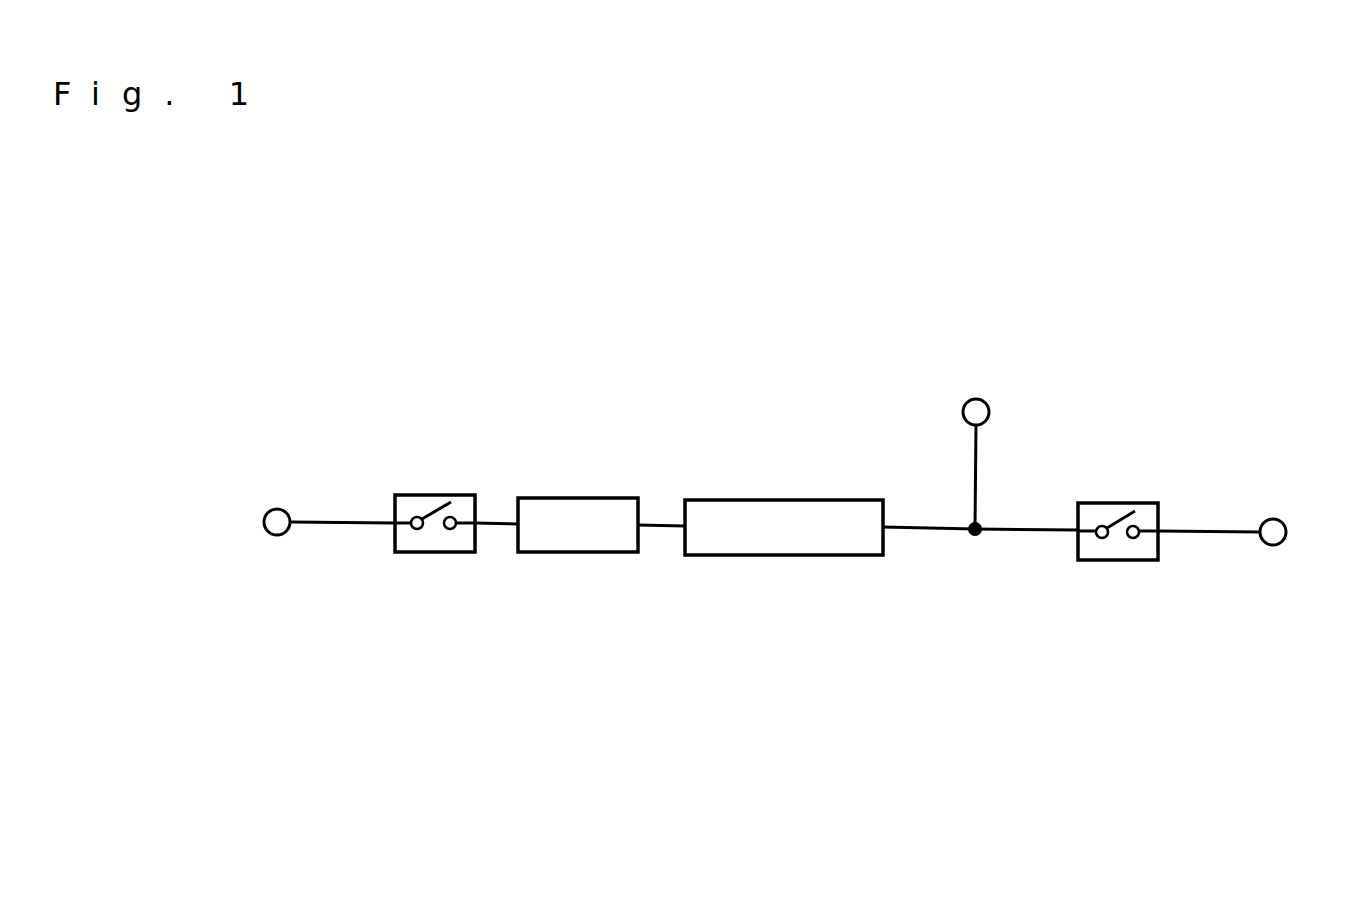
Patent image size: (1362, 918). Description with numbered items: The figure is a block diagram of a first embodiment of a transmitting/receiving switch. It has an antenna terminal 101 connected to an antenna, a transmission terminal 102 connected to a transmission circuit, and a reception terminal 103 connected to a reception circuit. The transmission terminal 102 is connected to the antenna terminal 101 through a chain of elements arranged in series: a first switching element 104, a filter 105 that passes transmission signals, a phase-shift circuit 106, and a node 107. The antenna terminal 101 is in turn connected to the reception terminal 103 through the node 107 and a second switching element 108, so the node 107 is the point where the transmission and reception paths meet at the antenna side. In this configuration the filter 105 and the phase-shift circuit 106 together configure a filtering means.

The antenna terminal 101 is at (1119, 435).
The transmission terminal 102 is at (265, 413).
The reception terminal 103 is at (1273, 626).
The first switching element 104 is at (426, 354).
The filter 105 is at (578, 421).
The phase-shift circuit 106 is at (784, 363).
The node 107 is at (921, 625).
The second switching element 108 is at (1085, 687).